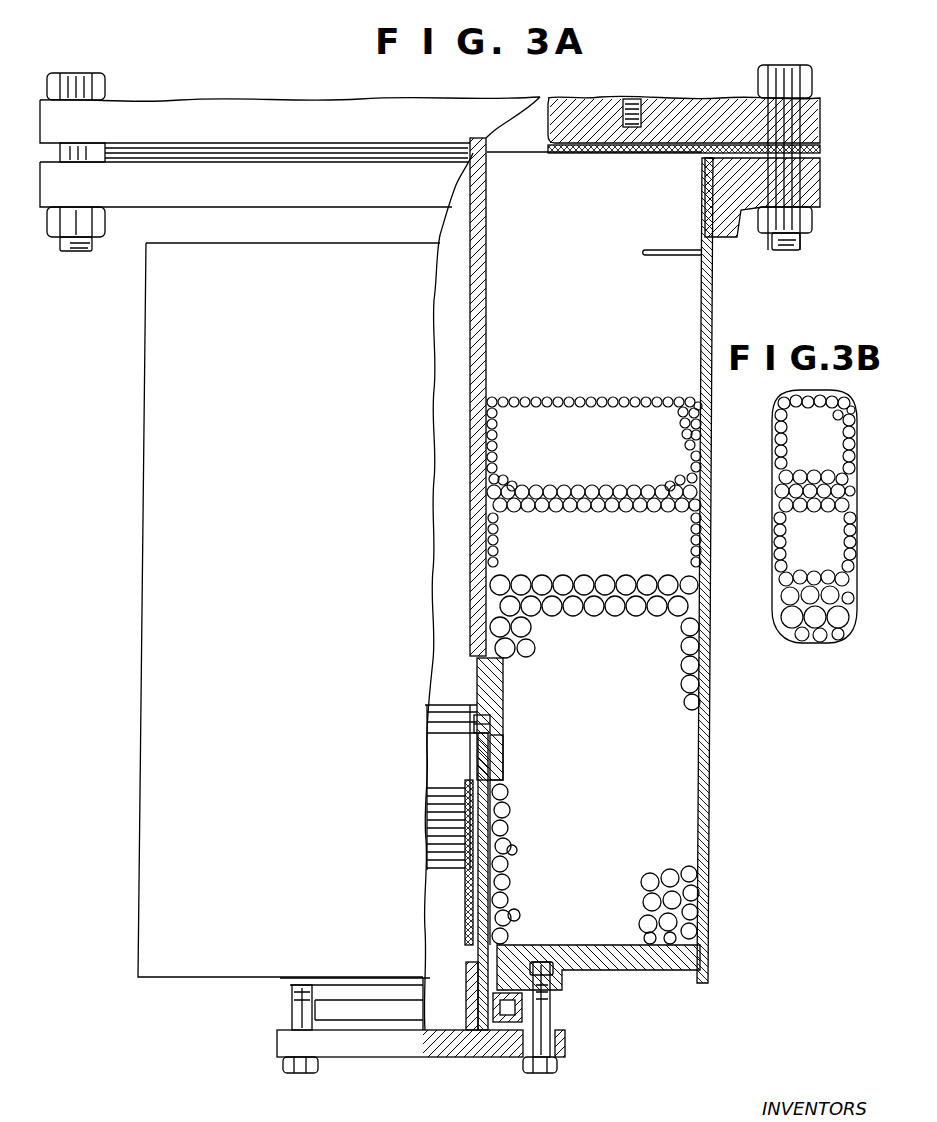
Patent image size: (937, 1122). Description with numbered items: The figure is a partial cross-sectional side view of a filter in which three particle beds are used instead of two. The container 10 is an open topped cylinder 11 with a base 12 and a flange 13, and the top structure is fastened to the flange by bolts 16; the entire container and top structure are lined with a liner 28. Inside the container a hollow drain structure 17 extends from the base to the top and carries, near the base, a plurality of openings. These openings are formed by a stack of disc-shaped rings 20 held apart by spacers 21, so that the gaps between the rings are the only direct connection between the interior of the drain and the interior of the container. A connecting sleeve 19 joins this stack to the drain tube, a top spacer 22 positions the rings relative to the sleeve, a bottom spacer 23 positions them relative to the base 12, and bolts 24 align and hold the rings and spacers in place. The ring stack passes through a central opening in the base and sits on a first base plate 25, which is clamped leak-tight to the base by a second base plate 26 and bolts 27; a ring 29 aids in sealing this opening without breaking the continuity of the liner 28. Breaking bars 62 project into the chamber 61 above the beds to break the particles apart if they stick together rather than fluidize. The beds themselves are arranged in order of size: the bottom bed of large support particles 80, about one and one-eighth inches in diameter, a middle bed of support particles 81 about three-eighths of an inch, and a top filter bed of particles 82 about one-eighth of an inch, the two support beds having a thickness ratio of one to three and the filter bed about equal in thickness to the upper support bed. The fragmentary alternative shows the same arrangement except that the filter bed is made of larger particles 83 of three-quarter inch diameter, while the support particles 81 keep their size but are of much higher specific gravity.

In FIG. 3A, the container 10 is at (712, 594).
In FIG. 3A, the open topped cylinder 11 is at (708, 669).
In FIG. 3A, the base 12 is at (600, 970).
In FIG. 3A, the flange 13 is at (112, 210).
In FIG. 3A, the bolts 16 is at (76, 85).
In FIG. 3A, the drain structure 17 is at (505, 680).
In FIG. 3A, the connecting sleeve 19 is at (505, 711).
In FIG. 3A, the disc-shaped rings 20 is at (442, 830).
In FIG. 3A, the spacers 21 is at (495, 842).
In FIG. 3A, the top spacer 22 is at (505, 770).
In FIG. 3A, the bottom spacer 23 is at (480, 965).
In FIG. 3A, the bolts 24 is at (490, 730).
In FIG. 3A, the first base plate 25 is at (454, 1030).
In FIG. 3A, the second base plate 26 is at (278, 1043).
In FIG. 3A, the bolts 27 is at (283, 1066).
In FIG. 3A, the liner 28 is at (493, 990).
In FIG. 3A, the ring 29 is at (552, 1013).
In FIG. 3A, the upper chamber 61 is at (578, 232).
In FIG. 3A, the breaking bars 62 is at (668, 248).
In FIG. 3A, the support particles 80 is at (697, 631).
In FIG. 3A, the support particles 81 is at (606, 572).
In FIG. 3A, the filter bed particles 82 is at (697, 464).
In FIG. 3B, the filter bed particles 83 is at (845, 446).